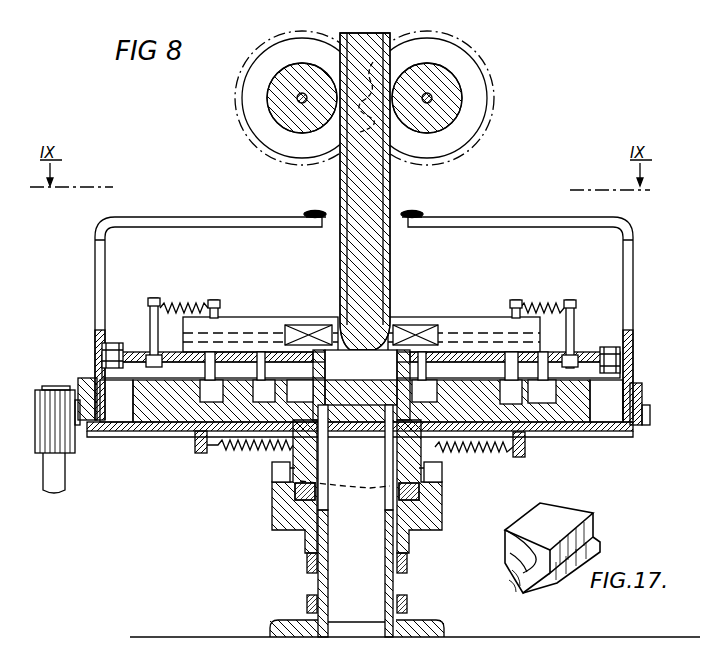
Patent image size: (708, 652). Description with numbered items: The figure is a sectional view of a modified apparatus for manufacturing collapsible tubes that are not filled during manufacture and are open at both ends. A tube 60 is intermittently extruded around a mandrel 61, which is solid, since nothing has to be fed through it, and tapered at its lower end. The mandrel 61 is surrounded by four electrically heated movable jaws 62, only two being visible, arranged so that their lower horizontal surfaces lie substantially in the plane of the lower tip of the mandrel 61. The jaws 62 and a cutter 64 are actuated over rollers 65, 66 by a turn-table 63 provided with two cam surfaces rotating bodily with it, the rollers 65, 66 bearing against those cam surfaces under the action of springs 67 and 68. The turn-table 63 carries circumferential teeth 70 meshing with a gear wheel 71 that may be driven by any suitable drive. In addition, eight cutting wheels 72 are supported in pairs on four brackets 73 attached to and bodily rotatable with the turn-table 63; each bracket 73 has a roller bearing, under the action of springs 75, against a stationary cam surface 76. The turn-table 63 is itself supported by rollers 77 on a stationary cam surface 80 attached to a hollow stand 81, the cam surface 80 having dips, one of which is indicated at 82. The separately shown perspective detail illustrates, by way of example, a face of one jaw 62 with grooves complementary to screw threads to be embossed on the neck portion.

In FIG. 8, the tube 60 is at (373, 63).
In FIG. 8, the mandrel 61 is at (382, 185).
In FIG. 8, the movable jaws 62 is at (310, 325).
In FIG. 17, the movable jaws 62 is at (567, 515).
In FIG. 8, the turn-table 63 is at (566, 416).
In FIG. 8, the cutter 64 is at (332, 356).
In FIG. 8, the roller 65 is at (205, 402).
In FIG. 8, the roller 66 is at (360, 452).
In FIG. 8, the spring 67 is at (172, 302).
In FIG. 8, the spring 68 is at (187, 325).
In FIG. 8, the circumferential teeth 70 is at (650, 413).
In FIG. 8, the gear wheel 71 is at (48, 430).
In FIG. 8, the cutting wheels 72 is at (317, 211).
In FIG. 8, the brackets 73 is at (102, 262).
In FIG. 8, the springs 75 is at (262, 445).
In FIG. 8, the stationary cam surface 76 is at (112, 345).
In FIG. 8, the rollers 77 is at (274, 473).
In FIG. 8, the stationary cam surface 80 is at (440, 505).
In FIG. 8, the hollow stand 81 is at (393, 580).
In FIG. 8, the dip 82 is at (370, 488).